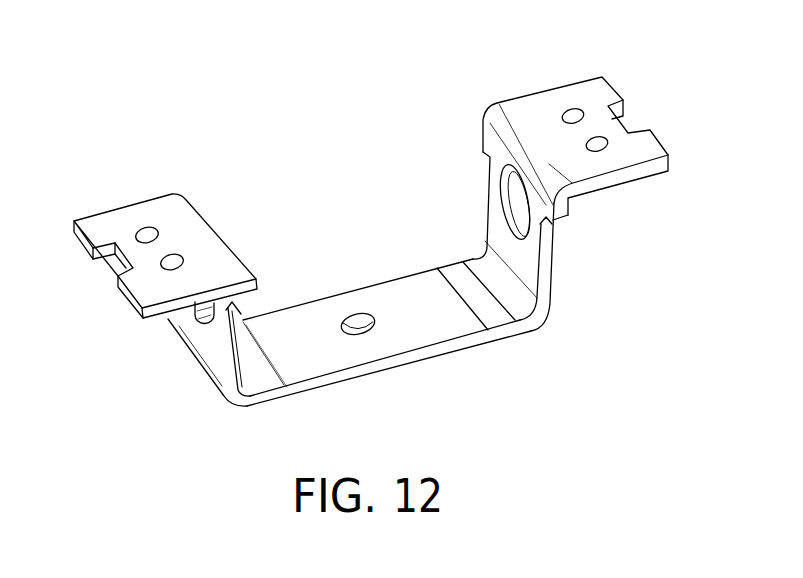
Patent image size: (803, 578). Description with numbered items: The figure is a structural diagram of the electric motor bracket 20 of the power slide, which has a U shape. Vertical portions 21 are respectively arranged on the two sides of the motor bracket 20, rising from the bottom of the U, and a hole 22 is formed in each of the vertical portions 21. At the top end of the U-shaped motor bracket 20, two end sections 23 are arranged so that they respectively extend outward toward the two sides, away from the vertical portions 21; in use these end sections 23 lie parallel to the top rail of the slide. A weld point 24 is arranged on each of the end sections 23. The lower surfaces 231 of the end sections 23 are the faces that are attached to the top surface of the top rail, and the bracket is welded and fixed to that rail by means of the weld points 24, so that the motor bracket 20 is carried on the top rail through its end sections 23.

The electric motor bracket 20 is at (382, 302).
The vertical portion 21 is at (206, 335).
The hole 22 is at (550, 245).
The end section 23 is at (155, 212).
The lower surface 231 is at (170, 320).
The weld point 24 is at (567, 112).